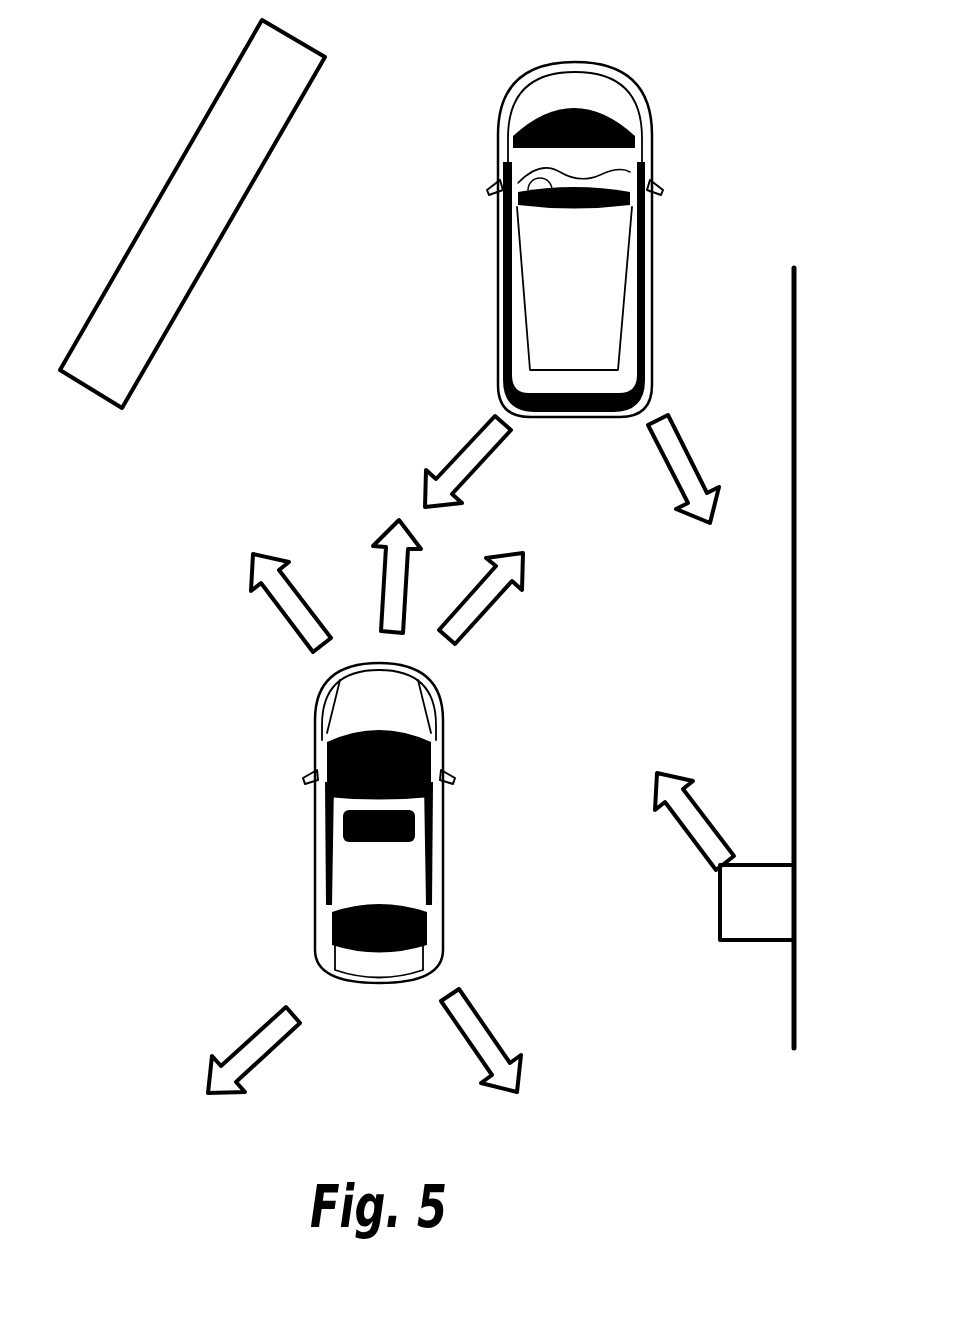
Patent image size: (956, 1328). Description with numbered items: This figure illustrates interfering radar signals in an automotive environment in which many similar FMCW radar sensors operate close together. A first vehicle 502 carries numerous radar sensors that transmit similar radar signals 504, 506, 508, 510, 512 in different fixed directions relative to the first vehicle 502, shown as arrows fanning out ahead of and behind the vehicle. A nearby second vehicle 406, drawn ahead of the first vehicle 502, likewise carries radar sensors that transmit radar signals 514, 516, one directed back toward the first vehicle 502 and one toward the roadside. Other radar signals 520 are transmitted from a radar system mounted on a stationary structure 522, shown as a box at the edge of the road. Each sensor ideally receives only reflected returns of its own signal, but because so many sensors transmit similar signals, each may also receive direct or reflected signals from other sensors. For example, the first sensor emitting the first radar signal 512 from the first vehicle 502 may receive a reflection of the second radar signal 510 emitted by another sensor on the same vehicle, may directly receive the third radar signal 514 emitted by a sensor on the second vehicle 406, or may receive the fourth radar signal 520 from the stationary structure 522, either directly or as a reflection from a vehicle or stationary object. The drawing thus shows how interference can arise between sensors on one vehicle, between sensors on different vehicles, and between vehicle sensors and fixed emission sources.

The second vehicle 406 is at (657, 191).
The first vehicle 502 is at (440, 808).
The radar signal 504 is at (477, 1020).
The radar signal 506 is at (245, 1045).
The radar signal 508 is at (265, 587).
The second radar signal 510 is at (413, 533).
The first radar signal 512 is at (522, 588).
The third radar signal 514 is at (447, 468).
The radar signal 516 is at (678, 428).
The fourth radar signal 520 is at (698, 807).
The stationary structure 522 is at (720, 930).